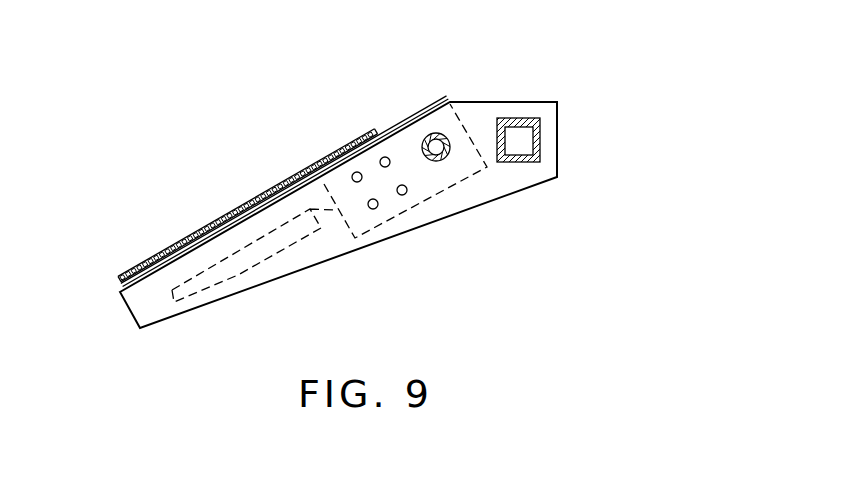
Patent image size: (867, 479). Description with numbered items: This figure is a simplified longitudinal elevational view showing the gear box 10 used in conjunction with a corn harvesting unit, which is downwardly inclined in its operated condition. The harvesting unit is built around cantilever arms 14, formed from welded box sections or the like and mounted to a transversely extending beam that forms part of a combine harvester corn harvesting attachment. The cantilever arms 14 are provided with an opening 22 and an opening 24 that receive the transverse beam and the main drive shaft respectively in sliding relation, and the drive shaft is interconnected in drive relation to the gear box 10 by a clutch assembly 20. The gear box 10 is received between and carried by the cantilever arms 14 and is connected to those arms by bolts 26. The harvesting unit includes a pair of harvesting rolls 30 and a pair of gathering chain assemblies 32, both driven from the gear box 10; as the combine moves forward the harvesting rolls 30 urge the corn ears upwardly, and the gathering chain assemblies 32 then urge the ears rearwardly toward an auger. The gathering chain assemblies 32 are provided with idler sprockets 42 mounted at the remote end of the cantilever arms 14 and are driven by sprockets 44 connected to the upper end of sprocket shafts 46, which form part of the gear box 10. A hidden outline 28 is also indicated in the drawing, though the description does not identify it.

The gear box 10 is at (58, 222).
The cantilever arms 14 is at (220, 230).
The clutch assembly 20 is at (338, 215).
The opening 22 is at (542, 138).
The opening 24 is at (431, 136).
The bolts 26 is at (374, 209).
The hidden recess 28 is at (405, 171).
The harvesting rolls 30 is at (255, 268).
The gathering chain assemblies 32 is at (262, 193).
The idler sprockets 42 is at (121, 277).
The sprockets 44 is at (374, 130).
The sprocket shafts 46 is at (338, 152).